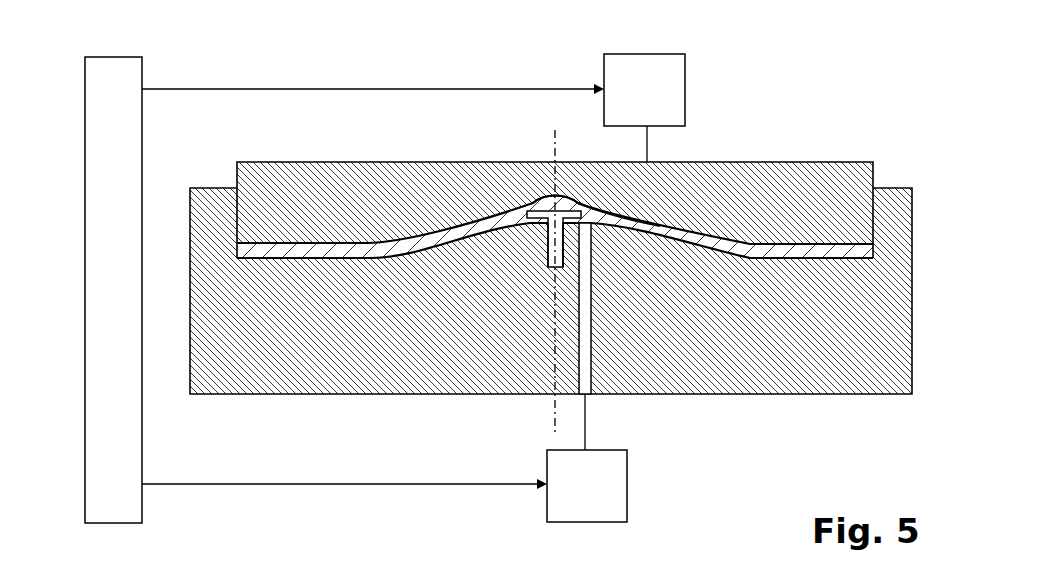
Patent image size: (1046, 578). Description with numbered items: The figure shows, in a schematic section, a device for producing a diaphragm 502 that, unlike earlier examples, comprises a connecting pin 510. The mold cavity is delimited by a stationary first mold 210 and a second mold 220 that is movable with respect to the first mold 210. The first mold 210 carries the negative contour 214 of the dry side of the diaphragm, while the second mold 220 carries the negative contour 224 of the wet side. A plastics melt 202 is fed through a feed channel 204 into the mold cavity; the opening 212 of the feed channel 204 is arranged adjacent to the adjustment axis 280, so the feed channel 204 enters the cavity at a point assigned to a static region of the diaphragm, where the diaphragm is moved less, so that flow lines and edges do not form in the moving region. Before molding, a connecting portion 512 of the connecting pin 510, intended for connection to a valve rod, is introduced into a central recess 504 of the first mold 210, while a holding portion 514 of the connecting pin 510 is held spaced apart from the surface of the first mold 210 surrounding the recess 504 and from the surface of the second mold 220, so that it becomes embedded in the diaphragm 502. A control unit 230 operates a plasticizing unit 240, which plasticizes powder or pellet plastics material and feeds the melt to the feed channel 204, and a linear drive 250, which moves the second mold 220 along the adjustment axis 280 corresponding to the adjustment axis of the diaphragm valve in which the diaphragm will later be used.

The first mold 210 is at (772, 340).
The second mold 220 is at (795, 205).
The diaphragm 502 is at (687, 243).
The negative contour of the dry side 214 is at (284, 250).
The negative contour of the wet side 224 is at (311, 258).
The opening of the feed channel 212 is at (589, 212).
The connecting portion 512 is at (540, 207).
The connecting pin 510 is at (548, 230).
The holding portion 514 is at (568, 237).
The central recess 504 is at (574, 238).
The plastics melt 202 is at (586, 335).
The feed channel 204 is at (591, 355).
The adjustment axis 280 is at (553, 140).
The linear drive 250 is at (644, 108).
The plasticizing unit 240 is at (587, 486).
The control unit 230 is at (344, 290).